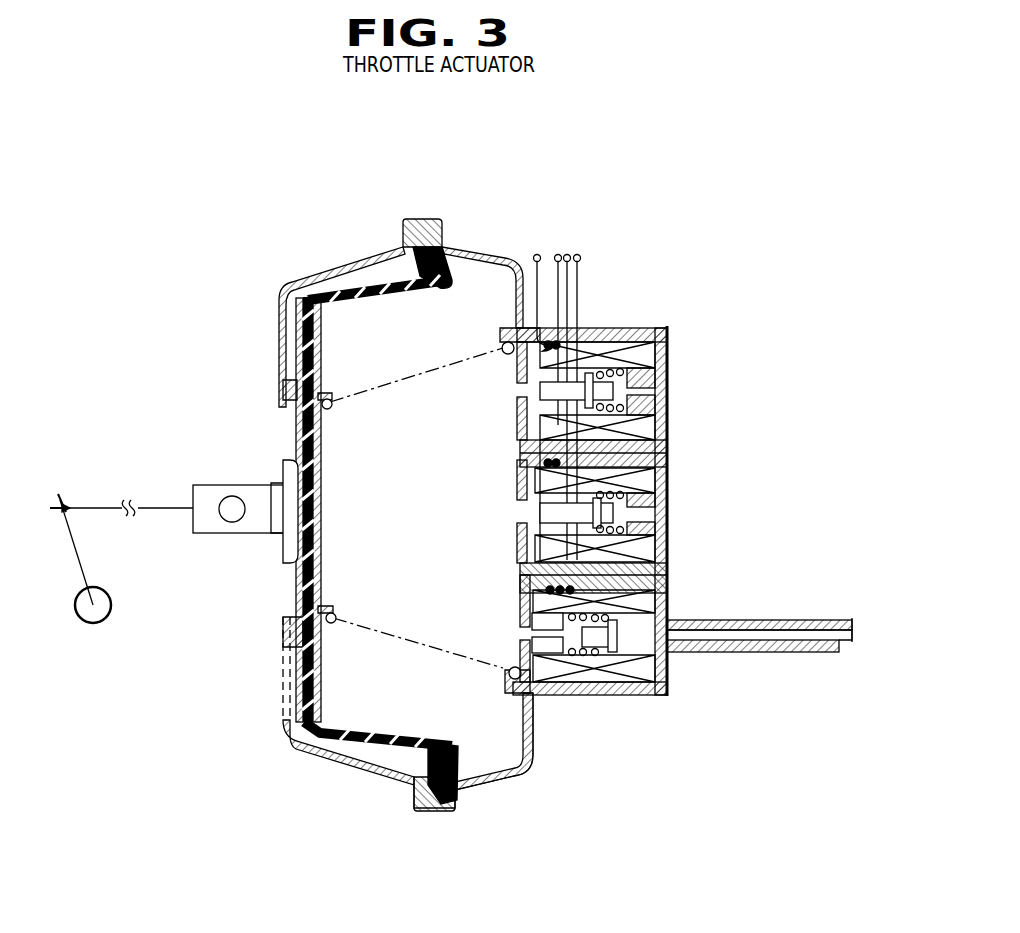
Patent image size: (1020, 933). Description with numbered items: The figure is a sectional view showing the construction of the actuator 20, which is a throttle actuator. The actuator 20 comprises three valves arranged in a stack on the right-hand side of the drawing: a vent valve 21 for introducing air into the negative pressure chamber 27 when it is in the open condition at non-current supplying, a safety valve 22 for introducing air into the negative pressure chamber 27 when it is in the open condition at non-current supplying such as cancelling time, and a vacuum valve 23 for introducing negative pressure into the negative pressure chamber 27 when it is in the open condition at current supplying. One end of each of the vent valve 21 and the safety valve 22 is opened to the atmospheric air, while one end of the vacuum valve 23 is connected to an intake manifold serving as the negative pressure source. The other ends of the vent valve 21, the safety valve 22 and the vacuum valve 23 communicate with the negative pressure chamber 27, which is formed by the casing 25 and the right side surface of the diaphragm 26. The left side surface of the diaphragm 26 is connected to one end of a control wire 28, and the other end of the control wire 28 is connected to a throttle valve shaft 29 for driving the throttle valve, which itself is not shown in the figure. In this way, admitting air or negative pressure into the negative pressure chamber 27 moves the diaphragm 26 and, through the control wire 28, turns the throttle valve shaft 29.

The actuator 20 is at (483, 233).
The vent valve 21 is at (668, 394).
The safety valve 22 is at (668, 513).
The vacuum valve 23 is at (655, 637).
The casing 25 is at (540, 752).
The diaphragm 26 is at (403, 752).
The negative pressure chamber 27 is at (430, 527).
The control wire 28 is at (158, 509).
The throttle valve shaft 29 is at (92, 624).